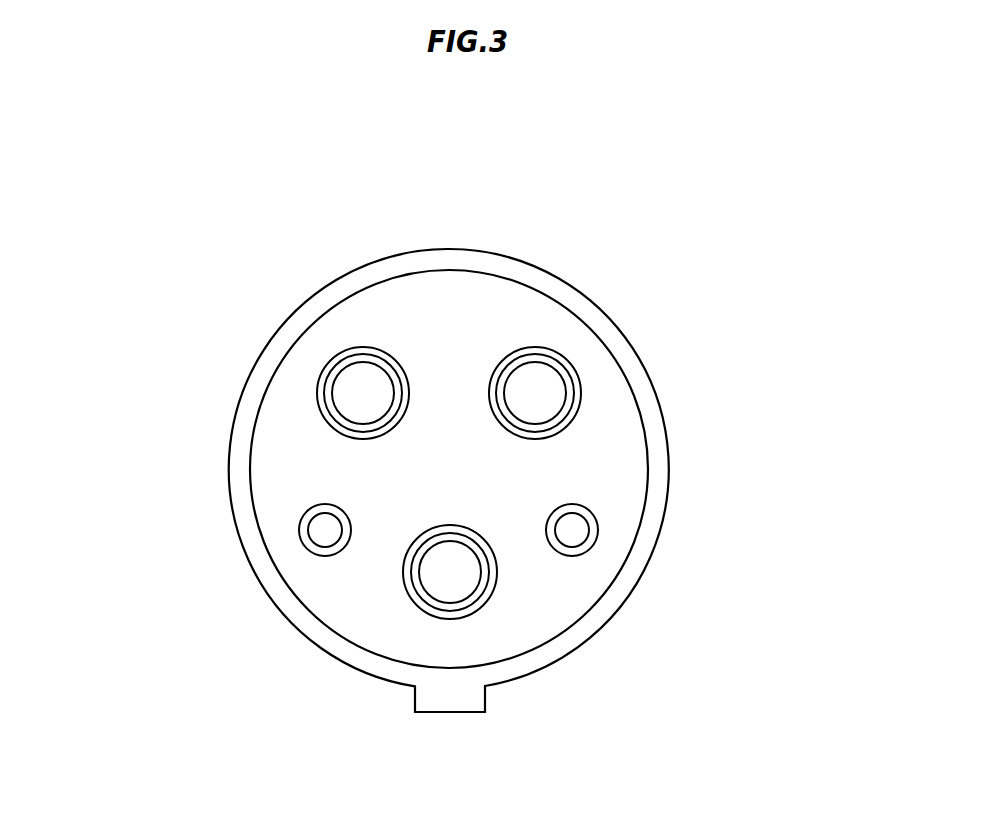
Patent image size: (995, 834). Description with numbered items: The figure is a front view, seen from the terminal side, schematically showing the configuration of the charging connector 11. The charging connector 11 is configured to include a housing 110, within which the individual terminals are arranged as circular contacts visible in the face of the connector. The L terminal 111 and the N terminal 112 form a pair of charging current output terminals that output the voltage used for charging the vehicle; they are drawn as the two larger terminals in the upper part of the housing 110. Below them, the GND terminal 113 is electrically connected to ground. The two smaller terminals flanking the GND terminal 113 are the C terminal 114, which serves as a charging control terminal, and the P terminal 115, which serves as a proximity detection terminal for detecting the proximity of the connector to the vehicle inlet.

The charging connector 11 is at (581, 217).
The housing 110 is at (352, 270).
The L terminal 111 is at (342, 372).
The N terminal 112 is at (563, 378).
The GND terminal 113 is at (478, 585).
The C terminal 114 is at (588, 526).
The P terminal 115 is at (308, 538).